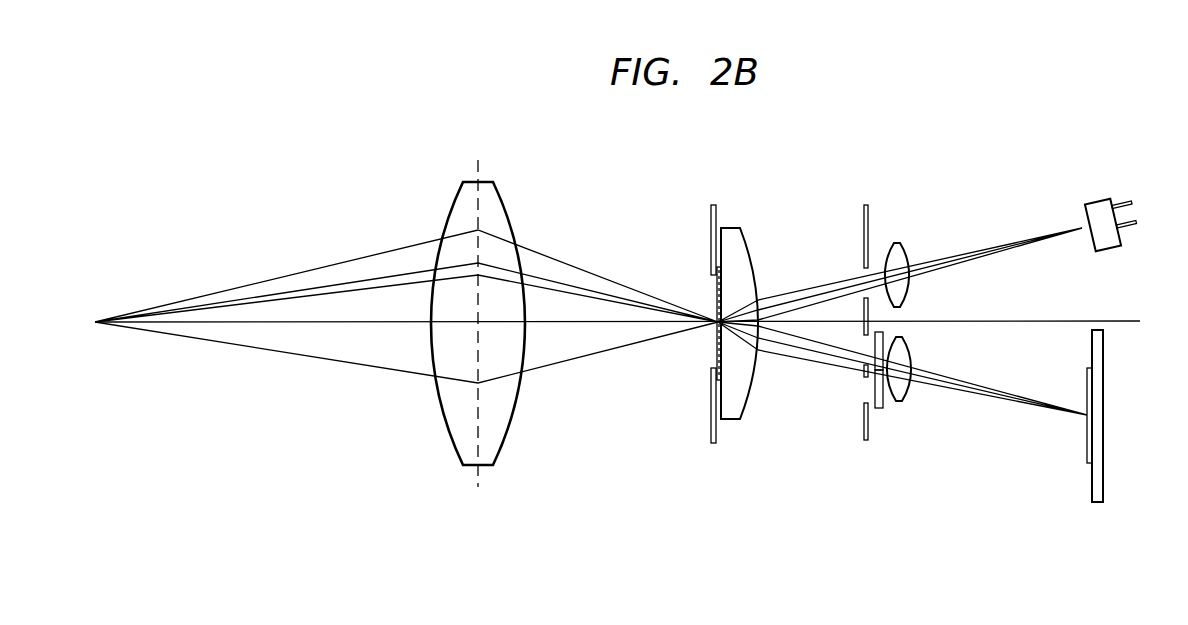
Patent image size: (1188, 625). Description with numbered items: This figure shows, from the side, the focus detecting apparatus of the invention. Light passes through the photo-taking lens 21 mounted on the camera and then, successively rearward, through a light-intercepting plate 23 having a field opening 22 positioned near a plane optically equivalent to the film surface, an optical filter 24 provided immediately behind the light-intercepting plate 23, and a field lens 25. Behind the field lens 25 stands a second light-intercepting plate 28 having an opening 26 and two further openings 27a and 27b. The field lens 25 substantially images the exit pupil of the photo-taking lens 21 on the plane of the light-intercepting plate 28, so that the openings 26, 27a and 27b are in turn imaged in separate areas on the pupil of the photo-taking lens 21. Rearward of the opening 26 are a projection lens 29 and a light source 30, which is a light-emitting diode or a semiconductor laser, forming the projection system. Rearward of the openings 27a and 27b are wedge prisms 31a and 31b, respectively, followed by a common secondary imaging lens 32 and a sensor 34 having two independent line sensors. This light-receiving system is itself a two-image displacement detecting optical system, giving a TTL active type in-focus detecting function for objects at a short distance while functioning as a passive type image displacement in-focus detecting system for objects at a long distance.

The photo-taking lens 21 is at (499, 192).
The field opening 22 is at (712, 297).
The light-intercepting plate 23 is at (711, 210).
The optical filter 24 is at (717, 358).
The field lens 25 is at (733, 228).
The opening 26 is at (865, 280).
The opening 27a is at (867, 348).
The opening 27b is at (865, 388).
The light-intercepting plate 28 is at (863, 218).
The projection lens 29 is at (893, 245).
The light source 30 is at (1091, 203).
The wedge prism 31a is at (883, 326).
The wedge prism 31b is at (878, 408).
The secondary imaging lens 32 is at (901, 401).
The sensor 34 is at (1092, 490).